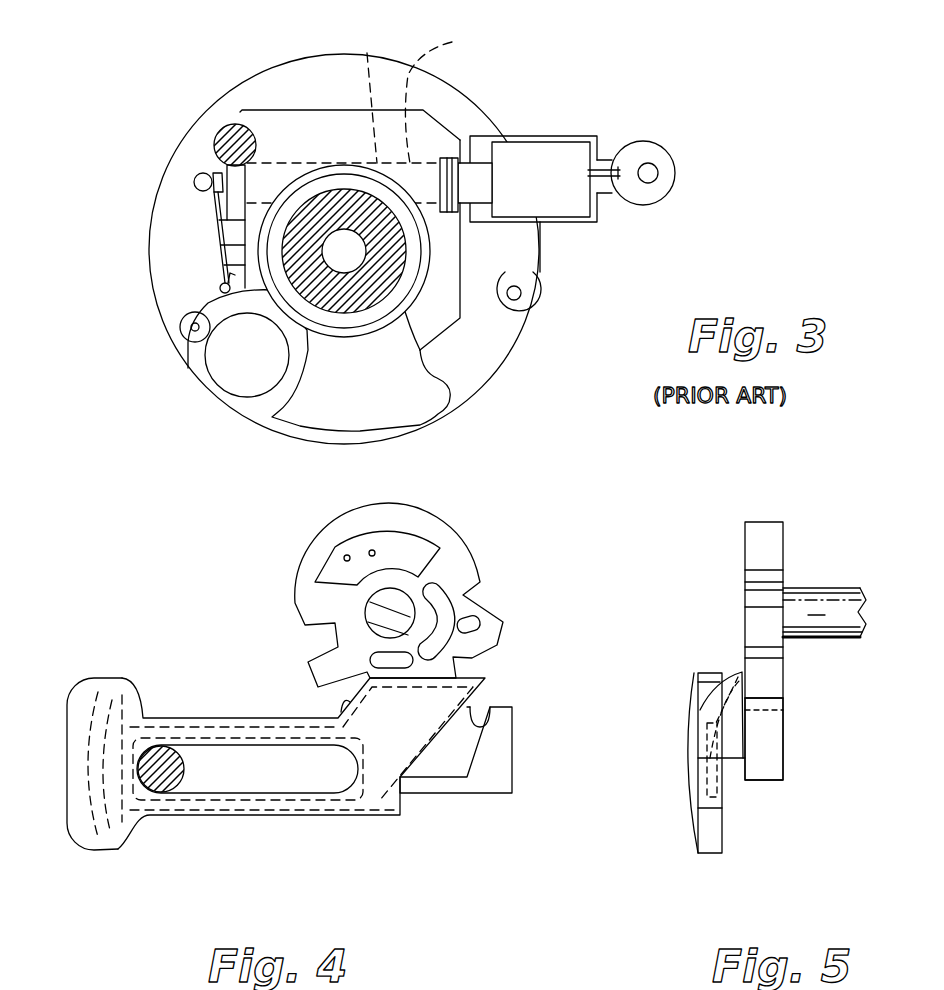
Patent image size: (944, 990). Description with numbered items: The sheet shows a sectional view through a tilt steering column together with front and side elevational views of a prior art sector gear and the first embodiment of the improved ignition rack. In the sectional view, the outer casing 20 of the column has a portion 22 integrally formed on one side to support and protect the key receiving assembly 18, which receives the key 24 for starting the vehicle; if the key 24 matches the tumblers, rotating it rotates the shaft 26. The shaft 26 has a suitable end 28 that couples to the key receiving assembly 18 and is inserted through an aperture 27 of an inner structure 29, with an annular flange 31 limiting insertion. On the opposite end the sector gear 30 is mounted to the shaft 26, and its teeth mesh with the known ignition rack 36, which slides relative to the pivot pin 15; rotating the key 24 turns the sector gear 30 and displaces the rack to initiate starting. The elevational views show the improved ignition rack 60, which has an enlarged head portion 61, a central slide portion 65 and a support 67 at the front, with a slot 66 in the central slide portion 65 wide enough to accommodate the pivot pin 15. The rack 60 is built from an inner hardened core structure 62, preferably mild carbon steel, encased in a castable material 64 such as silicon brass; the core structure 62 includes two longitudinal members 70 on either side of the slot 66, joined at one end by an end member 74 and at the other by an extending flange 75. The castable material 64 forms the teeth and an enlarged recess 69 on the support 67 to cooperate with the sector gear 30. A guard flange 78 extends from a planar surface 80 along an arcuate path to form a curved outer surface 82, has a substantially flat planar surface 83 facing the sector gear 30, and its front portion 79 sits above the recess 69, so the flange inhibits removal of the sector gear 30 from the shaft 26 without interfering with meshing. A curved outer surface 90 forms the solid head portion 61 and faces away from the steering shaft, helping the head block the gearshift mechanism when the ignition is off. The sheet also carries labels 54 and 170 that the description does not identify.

In FIG. 4, the pivot pin 15 is at (180, 790).
In FIG. 3, the key receiving assembly 18 is at (474, 122).
In FIG. 3, the outer casing 20 is at (485, 385).
In FIG. 3, the portion of outer casing 22 is at (567, 224).
In FIG. 3, the key 24 is at (647, 141).
In FIG. 3, the shaft 26 is at (367, 53).
In FIG. 4, the shaft 26 is at (407, 592).
In FIG. 5, the shaft 26 is at (810, 593).
In FIG. 3, the aperture 27 is at (445, 96).
In FIG. 3, the end of shaft 28 is at (480, 163).
In FIG. 3, the inner structure 29 is at (452, 330).
In FIG. 3, the sector gear 30 is at (222, 220).
In FIG. 4, the sector gear 30 is at (440, 540).
In FIG. 5, the sector gear 30 is at (785, 538).
In FIG. 3, the annular flange 31 is at (522, 291).
In FIG. 3, the ignition rack 36 is at (227, 252).
In FIG. 3, the roller 54 is at (222, 128).
In FIG. 4, the ignition rack 60 is at (156, 681).
In FIG. 5, the ignition rack 60 is at (680, 828).
In FIG. 4, the enlarged head portion 61 is at (90, 682).
In FIG. 4, the inner hardened core structure 62 is at (287, 814).
In FIG. 5, the inner hardened core structure 62 is at (733, 746).
In FIG. 4, the castable material 64 is at (357, 818).
In FIG. 5, the castable material 64 is at (708, 855).
In FIG. 4, the central slide portion 65 is at (227, 816).
In FIG. 4, the slot 66 is at (263, 752).
In FIG. 4, the support 67 is at (512, 747).
In FIG. 5, the support 67 is at (783, 747).
In FIG. 4, the enlarged recess 69 is at (485, 722).
In FIG. 4, the longitudinal members 70 is at (183, 727).
In FIG. 4, the end member 74 is at (120, 850).
In FIG. 4, the extending flange 75 is at (423, 748).
In FIG. 5, the extending flange 75 is at (720, 712).
In FIG. 4, the guard flange 78 is at (495, 679).
In FIG. 5, the guard flange 78 is at (729, 663).
In FIG. 4, the front portion of guard flange 79 is at (480, 700).
In FIG. 5, the planar surface 80 is at (698, 808).
In FIG. 5, the curved outer surface 82 is at (710, 673).
In FIG. 5, the flat planar surface 83 is at (747, 697).
In FIG. 5, the curved outer surface 90 is at (690, 723).
In FIG. 3, the pivot 170 is at (222, 260).